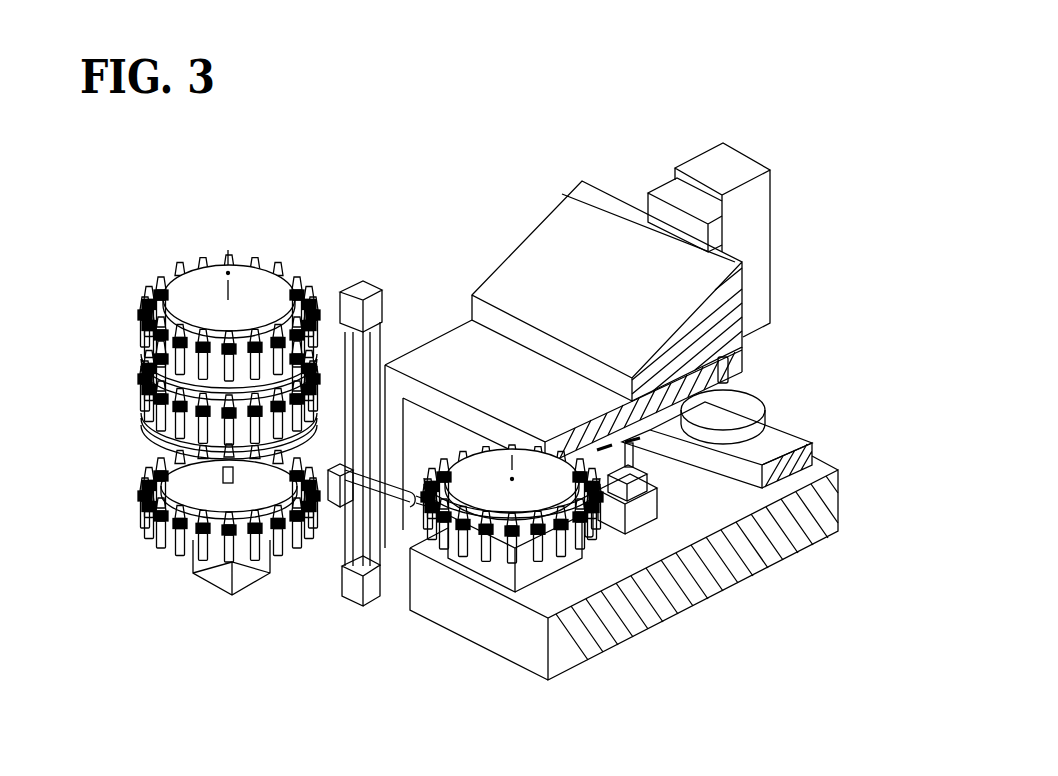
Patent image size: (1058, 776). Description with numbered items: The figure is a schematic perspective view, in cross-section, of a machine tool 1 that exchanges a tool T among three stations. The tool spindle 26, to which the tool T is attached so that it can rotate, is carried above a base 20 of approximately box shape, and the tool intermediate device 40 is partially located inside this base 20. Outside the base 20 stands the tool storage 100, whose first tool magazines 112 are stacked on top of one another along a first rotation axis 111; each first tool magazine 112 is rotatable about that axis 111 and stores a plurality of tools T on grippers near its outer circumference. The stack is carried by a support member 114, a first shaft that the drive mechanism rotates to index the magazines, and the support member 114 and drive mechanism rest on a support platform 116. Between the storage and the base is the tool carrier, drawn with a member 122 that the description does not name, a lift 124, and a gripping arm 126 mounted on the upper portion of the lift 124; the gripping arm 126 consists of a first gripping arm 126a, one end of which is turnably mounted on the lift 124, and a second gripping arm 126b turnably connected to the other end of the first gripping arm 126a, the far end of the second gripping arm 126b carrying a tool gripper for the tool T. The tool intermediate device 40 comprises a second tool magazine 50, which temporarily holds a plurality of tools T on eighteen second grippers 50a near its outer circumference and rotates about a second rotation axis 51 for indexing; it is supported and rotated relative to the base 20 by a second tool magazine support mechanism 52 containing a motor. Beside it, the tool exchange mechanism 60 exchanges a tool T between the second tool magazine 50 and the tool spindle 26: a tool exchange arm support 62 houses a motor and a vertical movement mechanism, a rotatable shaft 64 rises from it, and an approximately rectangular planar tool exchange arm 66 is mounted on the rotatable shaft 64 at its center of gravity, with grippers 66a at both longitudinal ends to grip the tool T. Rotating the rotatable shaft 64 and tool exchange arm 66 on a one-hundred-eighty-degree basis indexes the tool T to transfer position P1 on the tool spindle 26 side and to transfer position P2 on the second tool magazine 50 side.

The machine tool 1 is at (786, 130).
The base 20 is at (432, 353).
The tool spindle 26 is at (740, 352).
The tool intermediate device 40 is at (576, 606).
The second tool magazine 50 is at (515, 505).
The second grippers 50a is at (540, 566).
The second rotation axis 51 is at (512, 466).
The second tool magazine support mechanism 52 is at (485, 574).
The tool exchange mechanism 60 is at (675, 683).
The tool exchange arm support 62 is at (615, 517).
The rotatable shaft 64 is at (632, 458).
The tool exchange arm 66 is at (645, 432).
The grippers 66a is at (765, 468).
The tool storage 100 is at (216, 210).
The first rotation axis 111 is at (228, 290).
The first tool magazine 112 is at (178, 293).
The support member 114 is at (233, 483).
The support platform 116 is at (210, 574).
The post 122 is at (358, 292).
The lift 124 is at (335, 500).
The gripping arm 126 is at (320, 655).
The first gripping arm 126a is at (420, 497).
The second gripping arm 126b is at (432, 500).
The transfer position P1 is at (642, 392).
The transfer position P2 is at (580, 430).
The tool T is at (152, 447).